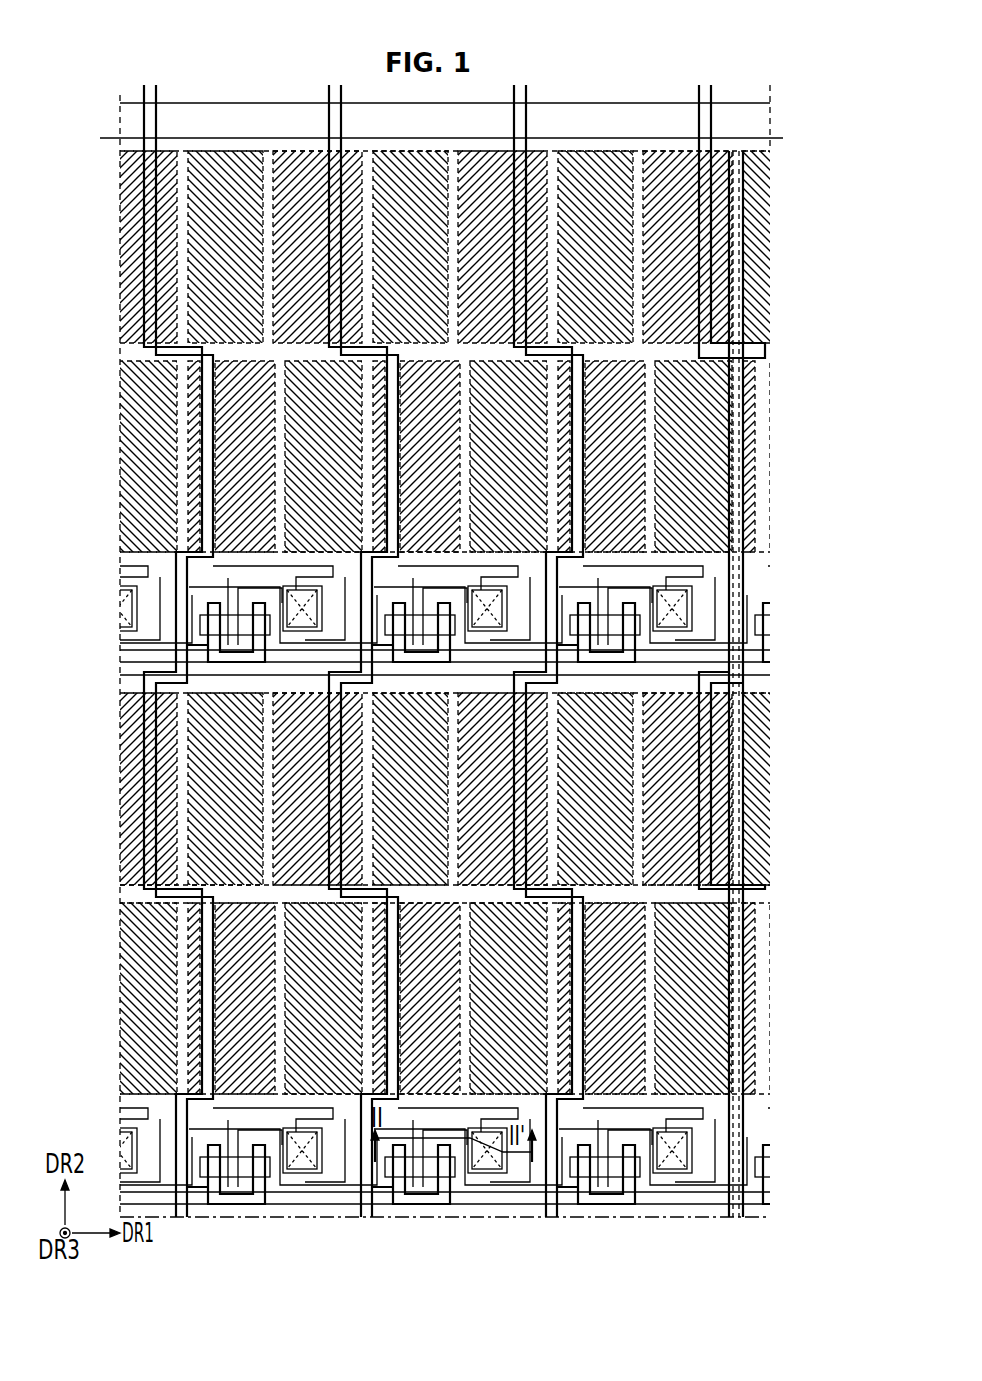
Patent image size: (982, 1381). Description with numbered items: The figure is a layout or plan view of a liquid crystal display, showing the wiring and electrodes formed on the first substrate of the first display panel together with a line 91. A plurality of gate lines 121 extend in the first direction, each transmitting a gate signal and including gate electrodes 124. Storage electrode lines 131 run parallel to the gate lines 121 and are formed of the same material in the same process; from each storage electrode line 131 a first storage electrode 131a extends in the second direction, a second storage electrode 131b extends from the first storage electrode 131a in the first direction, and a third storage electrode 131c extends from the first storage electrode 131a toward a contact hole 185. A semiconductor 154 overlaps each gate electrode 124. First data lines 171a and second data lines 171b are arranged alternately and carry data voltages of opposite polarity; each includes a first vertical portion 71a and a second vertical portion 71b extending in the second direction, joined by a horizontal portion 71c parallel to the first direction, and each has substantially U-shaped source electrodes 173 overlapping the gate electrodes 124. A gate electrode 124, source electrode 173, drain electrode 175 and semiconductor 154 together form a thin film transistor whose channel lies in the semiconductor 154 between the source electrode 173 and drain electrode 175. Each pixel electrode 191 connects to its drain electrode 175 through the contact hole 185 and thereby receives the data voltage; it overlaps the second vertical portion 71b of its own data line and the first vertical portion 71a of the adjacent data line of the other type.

The common voltage line 91 is at (750, 103).
The gate line 121 is at (128, 677).
The gate electrode 124 is at (380, 622).
The storage electrode line 131 is at (765, 151).
The first storage electrode 131a is at (697, 317).
The second storage electrode 131b is at (640, 508).
The third storage electrode 131c is at (620, 647).
The semiconductor 154 is at (660, 655).
The first data line 171a is at (150, 212).
The second data line 171b is at (290, 298).
The source electrode 173 is at (670, 707).
The drain electrode 175 is at (640, 540).
The contact hole 185 is at (640, 605).
The pixel electrode 191 is at (486, 150).
The first vertical portion 71a is at (270, 805).
The second vertical portion 71b is at (355, 997).
The horizontal portion 71c is at (355, 910).